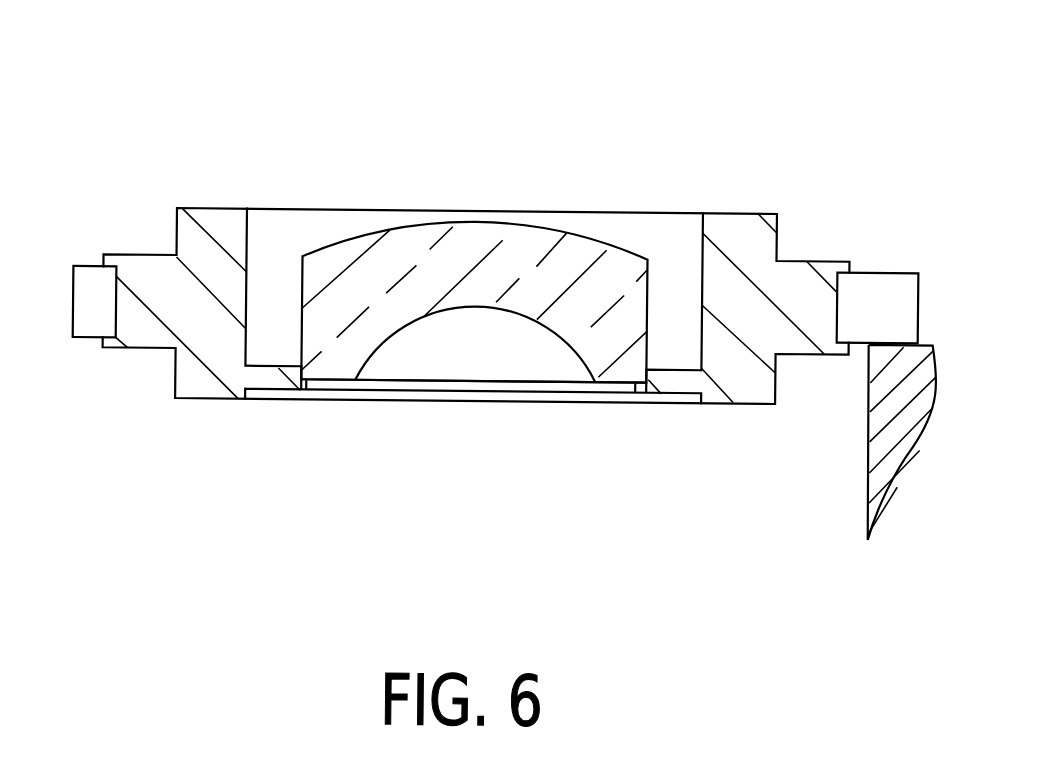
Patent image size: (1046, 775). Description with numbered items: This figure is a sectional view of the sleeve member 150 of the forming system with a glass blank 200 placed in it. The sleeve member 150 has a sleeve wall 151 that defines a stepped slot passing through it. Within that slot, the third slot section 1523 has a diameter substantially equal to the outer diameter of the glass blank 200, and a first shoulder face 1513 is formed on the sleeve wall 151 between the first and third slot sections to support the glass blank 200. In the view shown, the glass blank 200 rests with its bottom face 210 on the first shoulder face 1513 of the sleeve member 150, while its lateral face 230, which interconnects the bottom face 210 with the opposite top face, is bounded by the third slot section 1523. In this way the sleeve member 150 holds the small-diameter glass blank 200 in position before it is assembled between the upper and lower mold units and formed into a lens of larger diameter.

The sleeve member 150 is at (104, 257).
The sleeve wall 151 is at (153, 272).
The first shoulder face 1513 is at (311, 372).
The third slot section 1523 is at (653, 368).
The glass blank 200 is at (492, 227).
The bottom face 210 is at (333, 377).
The lateral face 230 is at (648, 362).